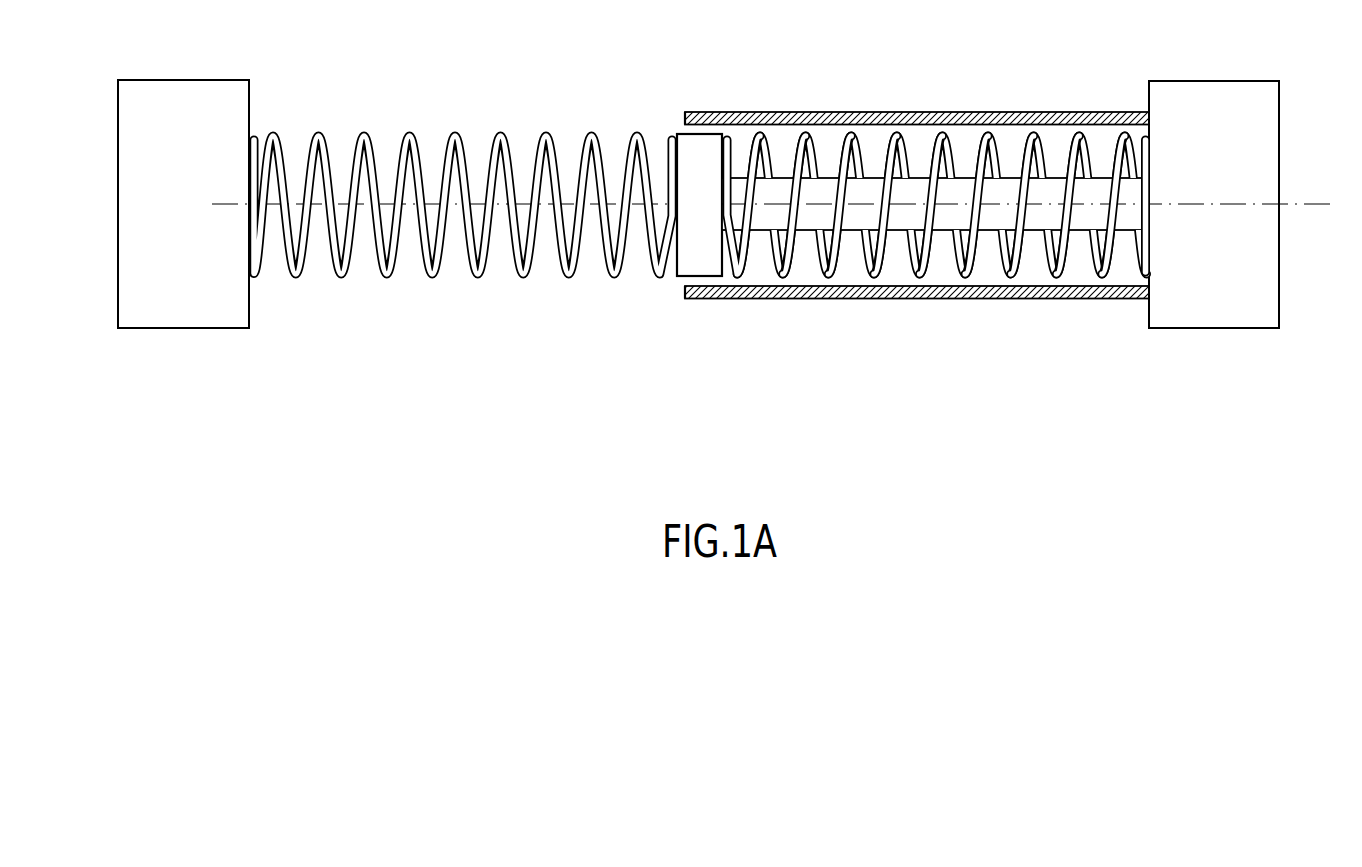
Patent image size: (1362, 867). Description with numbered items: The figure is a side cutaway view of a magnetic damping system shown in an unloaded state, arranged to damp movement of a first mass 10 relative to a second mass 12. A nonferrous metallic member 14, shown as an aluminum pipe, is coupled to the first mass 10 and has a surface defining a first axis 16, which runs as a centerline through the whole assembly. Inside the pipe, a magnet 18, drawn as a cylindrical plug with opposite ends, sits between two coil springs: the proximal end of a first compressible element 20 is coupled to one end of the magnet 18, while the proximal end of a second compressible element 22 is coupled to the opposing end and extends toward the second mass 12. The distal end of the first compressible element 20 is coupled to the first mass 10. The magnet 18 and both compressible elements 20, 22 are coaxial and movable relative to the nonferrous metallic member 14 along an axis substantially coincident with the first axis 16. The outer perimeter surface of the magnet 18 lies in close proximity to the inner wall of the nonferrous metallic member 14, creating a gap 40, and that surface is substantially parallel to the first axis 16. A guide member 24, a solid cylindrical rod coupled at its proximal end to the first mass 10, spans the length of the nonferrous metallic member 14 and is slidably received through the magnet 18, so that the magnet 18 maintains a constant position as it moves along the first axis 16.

The first mass 10 is at (1195, 80).
The second mass 12 is at (185, 80).
The nonferrous metallic member 14 is at (832, 111).
The first axis 16 is at (1300, 206).
The magnet 18 is at (712, 146).
The first compressible element 20 is at (940, 137).
The second compressible element 22 is at (318, 136).
The guide member 24 is at (808, 232).
The gap 40 is at (689, 127).